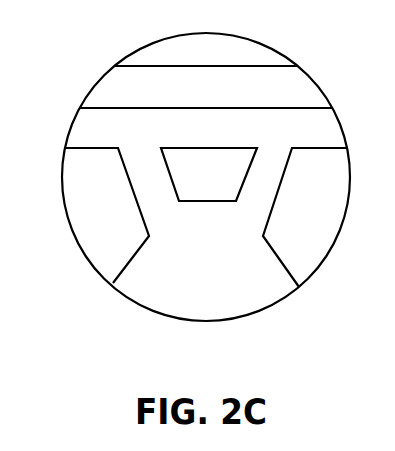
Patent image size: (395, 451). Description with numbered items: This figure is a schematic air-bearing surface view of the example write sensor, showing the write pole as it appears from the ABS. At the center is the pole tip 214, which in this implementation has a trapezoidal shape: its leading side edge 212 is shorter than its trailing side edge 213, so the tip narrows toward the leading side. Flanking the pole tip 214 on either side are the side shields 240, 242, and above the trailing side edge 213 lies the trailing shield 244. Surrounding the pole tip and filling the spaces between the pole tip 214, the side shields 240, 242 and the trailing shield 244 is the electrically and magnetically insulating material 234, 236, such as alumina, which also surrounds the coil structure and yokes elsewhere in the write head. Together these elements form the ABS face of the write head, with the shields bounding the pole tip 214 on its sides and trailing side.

The leading edge side 212 is at (193, 201).
The trailing edge side 213 is at (240, 148).
The pole tip 214 is at (225, 184).
The insulating material 234 is at (243, 284).
The insulating material 236 is at (135, 108).
The side shield 240 is at (118, 224).
The side shield 242 is at (325, 222).
The trailing shield 244 is at (186, 60).